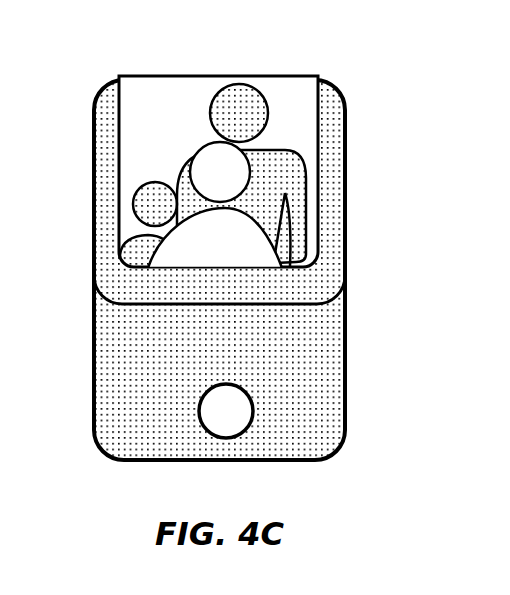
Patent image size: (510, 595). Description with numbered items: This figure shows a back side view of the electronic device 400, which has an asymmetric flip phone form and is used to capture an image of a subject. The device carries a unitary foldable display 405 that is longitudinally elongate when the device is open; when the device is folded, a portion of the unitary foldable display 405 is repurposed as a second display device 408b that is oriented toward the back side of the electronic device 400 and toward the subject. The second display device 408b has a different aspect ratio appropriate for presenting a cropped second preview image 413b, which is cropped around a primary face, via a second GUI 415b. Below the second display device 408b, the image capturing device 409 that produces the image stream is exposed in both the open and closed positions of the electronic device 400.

The electronic device 400 is at (230, 256).
The unitary foldable display 405 is at (258, 76).
The second display device 408b is at (320, 113).
The image capturing device 409 is at (213, 437).
The cropped second preview image 413b is at (275, 143).
The second GUI 415b is at (322, 240).